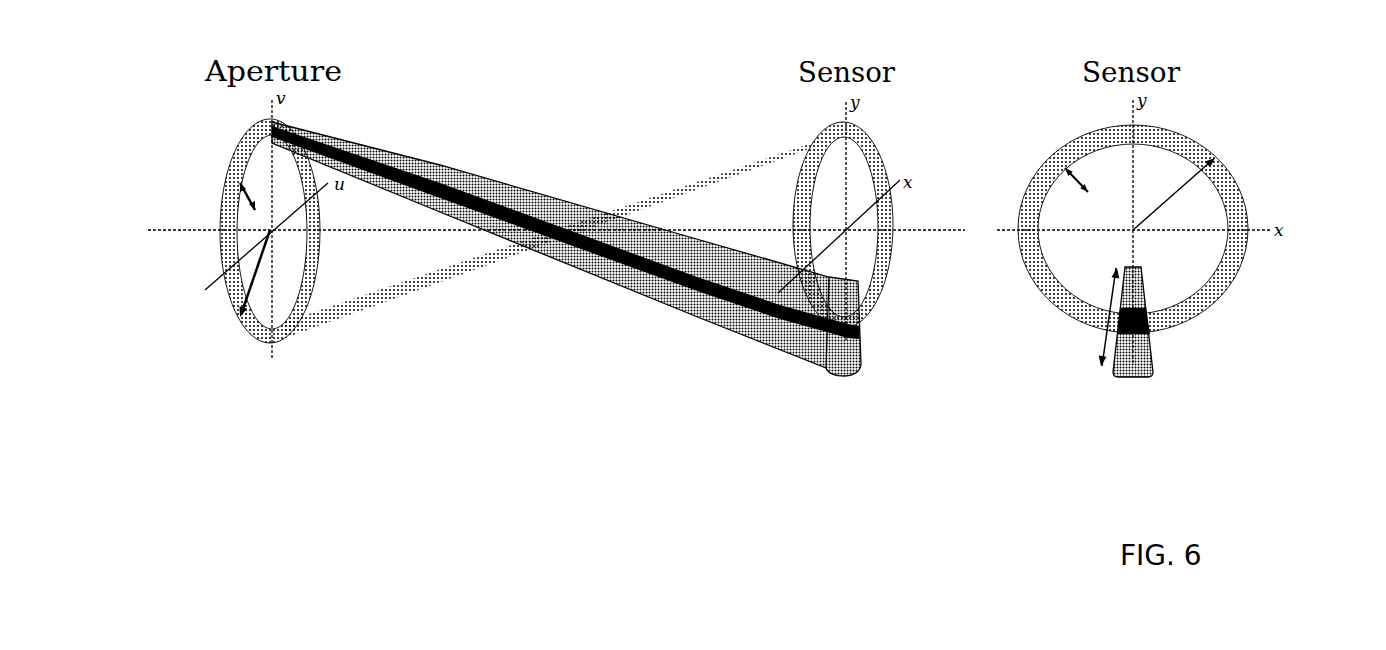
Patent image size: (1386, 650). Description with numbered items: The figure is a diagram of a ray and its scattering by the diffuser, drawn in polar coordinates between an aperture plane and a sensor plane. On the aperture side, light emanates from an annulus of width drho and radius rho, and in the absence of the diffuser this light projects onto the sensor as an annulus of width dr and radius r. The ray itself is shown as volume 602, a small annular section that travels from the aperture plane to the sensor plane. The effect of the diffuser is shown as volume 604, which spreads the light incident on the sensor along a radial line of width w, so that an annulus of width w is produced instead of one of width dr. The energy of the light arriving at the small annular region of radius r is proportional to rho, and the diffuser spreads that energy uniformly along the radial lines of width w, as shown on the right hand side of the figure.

The volume 602 is at (851, 329).
The volume 604 is at (689, 262).
The radius r is at (1182, 176).
The width dr is at (1044, 150).
The width w is at (1085, 317).
The radius rho is at (238, 286).
The width drho is at (226, 165).